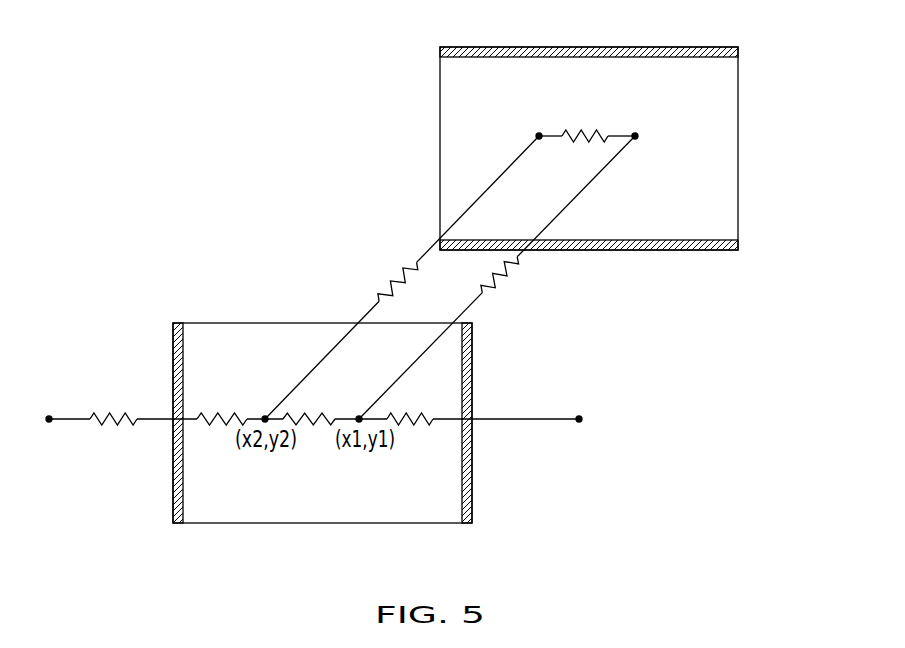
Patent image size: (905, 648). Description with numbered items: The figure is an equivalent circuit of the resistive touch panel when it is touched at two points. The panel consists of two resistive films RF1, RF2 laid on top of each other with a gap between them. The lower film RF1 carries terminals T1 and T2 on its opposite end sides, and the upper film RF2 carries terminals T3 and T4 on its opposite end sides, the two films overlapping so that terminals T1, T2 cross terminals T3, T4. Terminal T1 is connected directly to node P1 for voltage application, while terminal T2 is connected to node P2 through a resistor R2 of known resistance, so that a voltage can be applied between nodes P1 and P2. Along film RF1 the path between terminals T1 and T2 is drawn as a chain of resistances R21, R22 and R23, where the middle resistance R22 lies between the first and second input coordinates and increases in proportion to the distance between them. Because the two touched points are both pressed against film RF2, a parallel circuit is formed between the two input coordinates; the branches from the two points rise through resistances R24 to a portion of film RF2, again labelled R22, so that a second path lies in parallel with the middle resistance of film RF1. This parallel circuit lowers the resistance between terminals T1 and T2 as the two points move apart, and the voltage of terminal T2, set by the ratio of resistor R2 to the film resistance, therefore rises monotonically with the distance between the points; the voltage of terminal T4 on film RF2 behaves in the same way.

The node P1 is at (511, 406).
The node P2 is at (65, 405).
The resistor R2 is at (103, 426).
The resistance R21 is at (417, 426).
The resistance R22 is at (316, 426).
The resistance R23 is at (212, 426).
The resistor R24 is at (394, 282).
The resistive film RF1 is at (356, 523).
The resistive film RF2 is at (738, 205).
The terminal T1 is at (472, 503).
The terminal T2 is at (173, 505).
The terminal T3 is at (706, 47).
The terminal T4 is at (706, 252).